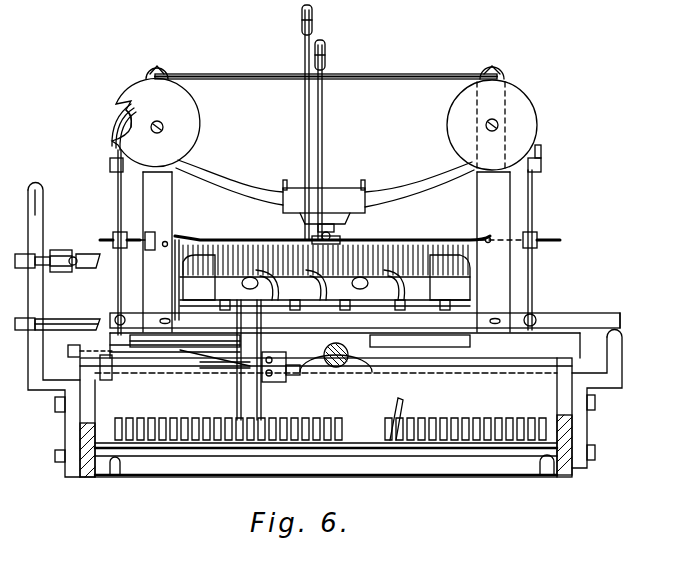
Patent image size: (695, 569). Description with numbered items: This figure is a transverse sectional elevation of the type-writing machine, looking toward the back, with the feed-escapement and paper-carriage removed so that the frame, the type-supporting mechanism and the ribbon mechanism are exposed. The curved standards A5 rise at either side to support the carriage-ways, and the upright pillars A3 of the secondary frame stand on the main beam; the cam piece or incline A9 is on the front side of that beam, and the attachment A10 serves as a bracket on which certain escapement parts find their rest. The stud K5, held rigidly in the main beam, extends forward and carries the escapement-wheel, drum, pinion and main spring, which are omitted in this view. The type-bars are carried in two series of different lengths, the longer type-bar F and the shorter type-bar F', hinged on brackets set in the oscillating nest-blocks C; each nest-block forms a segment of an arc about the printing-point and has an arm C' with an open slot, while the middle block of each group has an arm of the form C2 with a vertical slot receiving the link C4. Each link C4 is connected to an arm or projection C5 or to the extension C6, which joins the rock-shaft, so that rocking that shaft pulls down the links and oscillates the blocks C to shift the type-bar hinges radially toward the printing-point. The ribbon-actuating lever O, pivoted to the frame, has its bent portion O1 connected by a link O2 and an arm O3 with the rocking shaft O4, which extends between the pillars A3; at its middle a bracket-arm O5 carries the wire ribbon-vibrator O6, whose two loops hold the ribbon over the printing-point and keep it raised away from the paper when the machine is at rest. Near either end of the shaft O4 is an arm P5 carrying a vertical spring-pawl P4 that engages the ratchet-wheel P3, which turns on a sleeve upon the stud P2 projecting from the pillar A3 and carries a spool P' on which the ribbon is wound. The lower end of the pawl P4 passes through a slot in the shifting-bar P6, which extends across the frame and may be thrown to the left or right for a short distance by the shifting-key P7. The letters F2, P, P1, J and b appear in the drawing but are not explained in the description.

The type-bar F is at (300, 122).
The type-bar F' is at (326, 140).
The horizontal cross bar F2 is at (440, 70).
The spool P' is at (340, 108).
The curved guide arm P1 is at (114, 114).
The stud P2 is at (110, 160).
The ratchet-wheel P3 is at (130, 108).
The spring-pawl P4 is at (116, 190).
The arm P5 is at (120, 240).
The shifting-bar P6 is at (142, 322).
The shifting-key P7 is at (622, 312).
The carriage block with belt P is at (325, 200).
The upright pillar A3 is at (326, 252).
The curved standard A5 is at (28, 196).
The cam piece A9 is at (265, 378).
The bracket A10 is at (286, 380).
The ribbon-actuating lever O is at (246, 366).
The bent portion of ribbon-actuating lever O1 is at (172, 376).
The link O2 is at (184, 262).
The arm O3 is at (165, 240).
The rock-shaft O4 is at (226, 238).
The bracket-arm O5 is at (345, 239).
The ribbon-vibrating arm O6 is at (285, 186).
The nest-block C is at (325, 277).
The arm of nest-block C' is at (328, 285).
The arm of middle nest-block C2 is at (309, 360).
The link C4 is at (275, 360).
The arm C5 is at (185, 345).
The extension C6 is at (376, 336).
The stud K5 is at (340, 368).
The handle shaft J is at (60, 253).
The link b is at (226, 366).